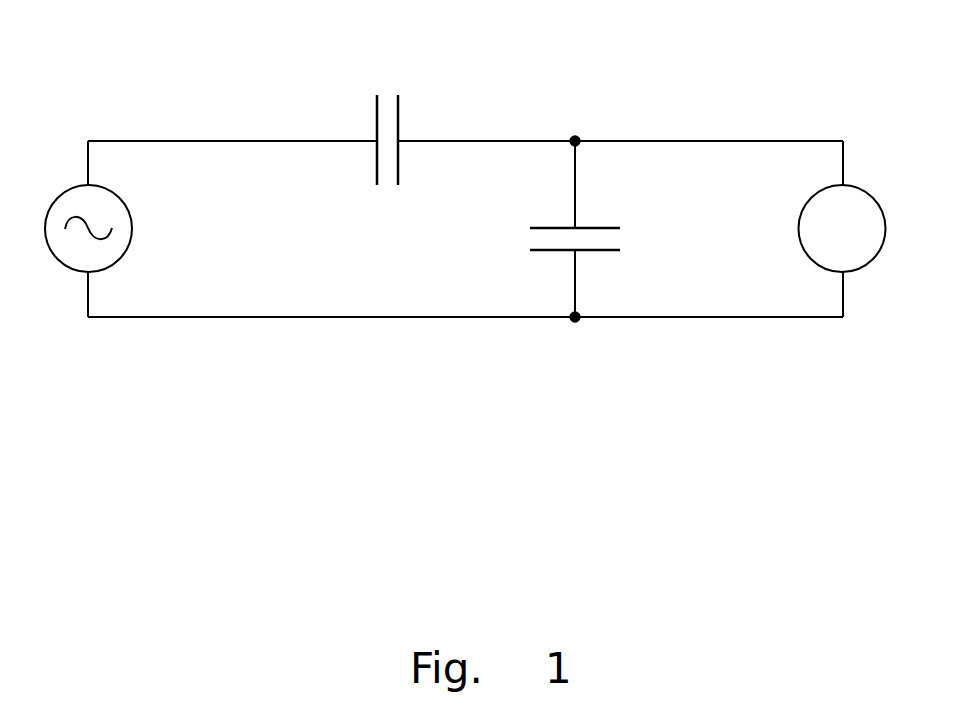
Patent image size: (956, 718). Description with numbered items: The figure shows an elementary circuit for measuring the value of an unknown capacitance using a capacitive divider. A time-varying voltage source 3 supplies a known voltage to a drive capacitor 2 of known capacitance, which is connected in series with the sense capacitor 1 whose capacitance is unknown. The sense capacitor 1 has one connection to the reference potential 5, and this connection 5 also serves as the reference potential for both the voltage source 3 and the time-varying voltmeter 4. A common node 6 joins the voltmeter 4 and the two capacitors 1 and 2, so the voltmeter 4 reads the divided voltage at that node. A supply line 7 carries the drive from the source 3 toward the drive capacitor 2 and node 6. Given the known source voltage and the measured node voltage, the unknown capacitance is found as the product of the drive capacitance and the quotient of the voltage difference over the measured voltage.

The sense capacitor 1 is at (518, 238).
The drive capacitor 2 is at (387, 92).
The time-varying voltage source 3 is at (53, 191).
The time-varying voltmeter 4 is at (793, 228).
The reference potential connection 5 is at (466, 320).
The common node 6 is at (548, 137).
The supply line 7 is at (154, 138).